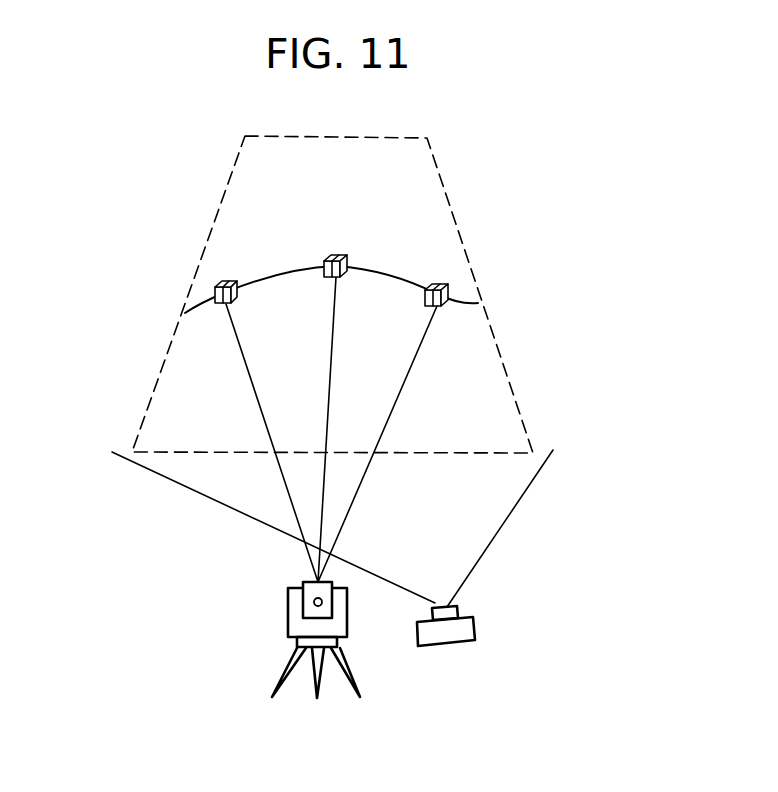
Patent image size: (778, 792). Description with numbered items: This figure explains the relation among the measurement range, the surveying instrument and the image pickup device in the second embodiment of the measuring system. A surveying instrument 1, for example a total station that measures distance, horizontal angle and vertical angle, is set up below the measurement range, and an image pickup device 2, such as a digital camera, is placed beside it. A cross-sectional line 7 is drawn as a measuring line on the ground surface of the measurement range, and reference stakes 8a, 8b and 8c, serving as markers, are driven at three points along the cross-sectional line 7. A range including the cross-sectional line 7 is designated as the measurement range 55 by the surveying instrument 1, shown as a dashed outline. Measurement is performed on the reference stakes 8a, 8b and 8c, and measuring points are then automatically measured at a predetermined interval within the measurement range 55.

The surveying instrument 1 is at (288, 617).
The image pickup device 2 is at (475, 620).
The cross-sectional line 7 is at (408, 280).
The reference stake 8a is at (212, 292).
The reference stake 8b is at (348, 258).
The reference stake 8c is at (449, 304).
The measurement range 55 is at (497, 342).